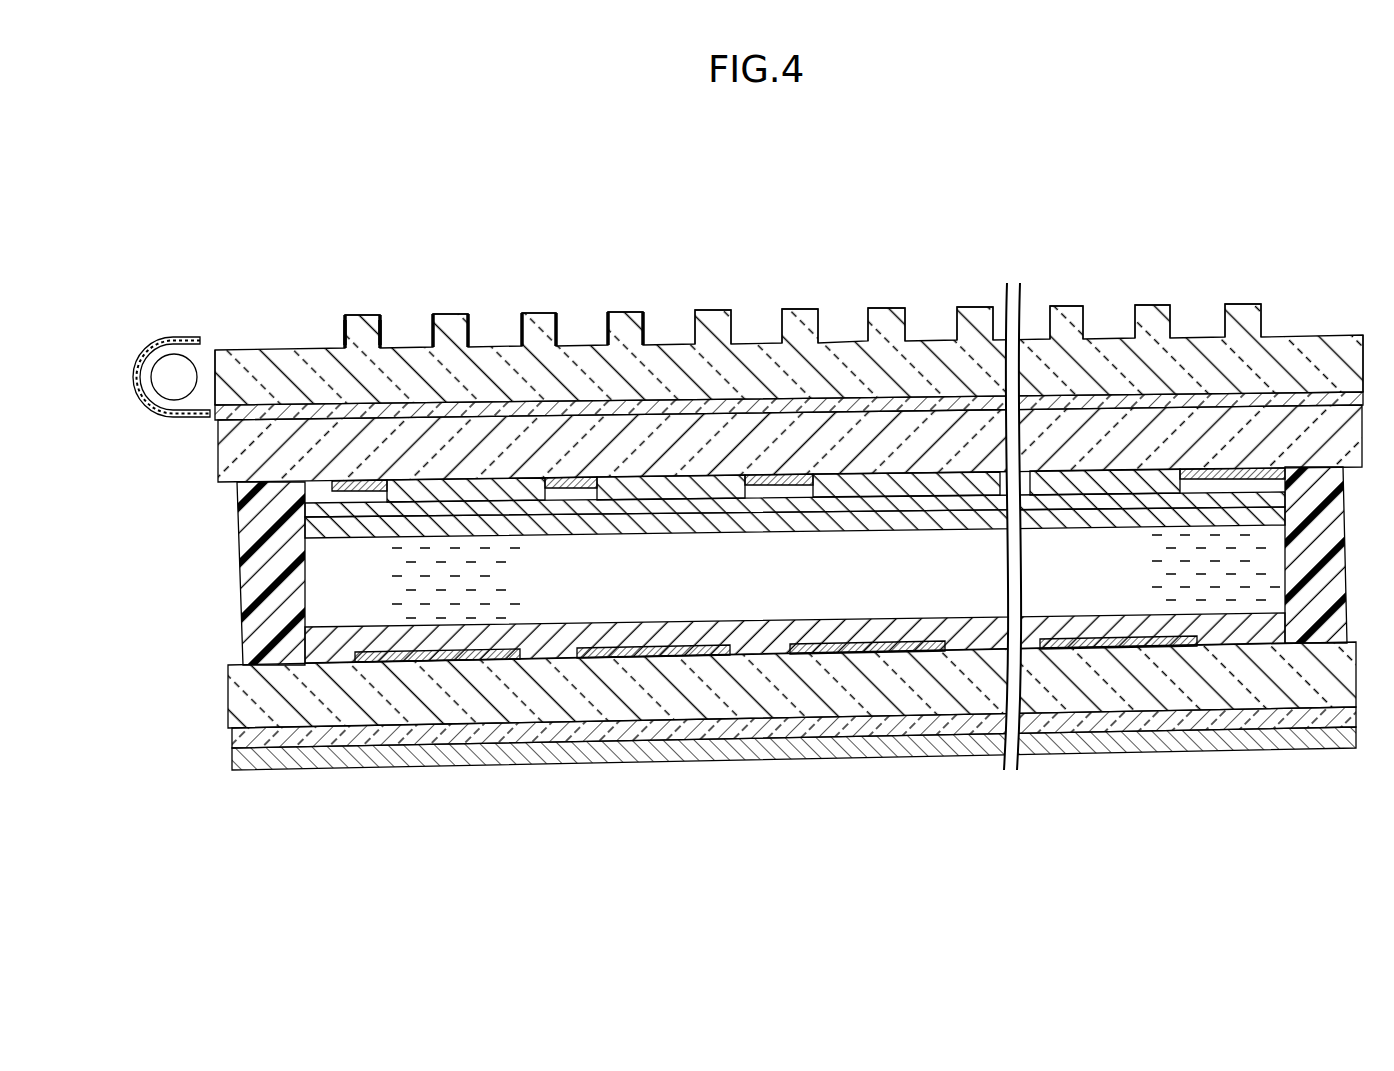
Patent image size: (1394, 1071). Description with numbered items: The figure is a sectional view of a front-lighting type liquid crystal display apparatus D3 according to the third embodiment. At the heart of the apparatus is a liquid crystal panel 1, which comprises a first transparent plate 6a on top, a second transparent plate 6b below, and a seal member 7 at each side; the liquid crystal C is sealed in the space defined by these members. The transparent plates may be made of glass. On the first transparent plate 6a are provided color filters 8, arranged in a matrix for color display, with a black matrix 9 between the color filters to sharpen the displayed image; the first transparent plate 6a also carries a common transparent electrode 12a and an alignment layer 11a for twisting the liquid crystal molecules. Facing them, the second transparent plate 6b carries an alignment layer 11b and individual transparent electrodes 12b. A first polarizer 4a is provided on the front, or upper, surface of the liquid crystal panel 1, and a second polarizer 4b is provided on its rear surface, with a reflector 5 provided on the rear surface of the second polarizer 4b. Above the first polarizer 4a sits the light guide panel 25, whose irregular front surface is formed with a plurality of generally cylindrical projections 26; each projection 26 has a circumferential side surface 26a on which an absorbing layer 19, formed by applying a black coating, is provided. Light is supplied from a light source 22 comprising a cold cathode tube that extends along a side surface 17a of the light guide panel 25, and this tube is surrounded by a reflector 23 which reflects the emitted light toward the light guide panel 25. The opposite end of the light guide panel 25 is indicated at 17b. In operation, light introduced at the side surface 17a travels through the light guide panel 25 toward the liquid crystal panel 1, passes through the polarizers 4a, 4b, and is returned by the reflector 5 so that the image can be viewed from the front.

The liquid crystal panel 1 is at (160, 585).
The first polarizer 4a is at (218, 412).
The second polarizer 4b is at (232, 738).
The reflector 5 is at (233, 760).
The first transparent plate 6a is at (243, 458).
The second transparent plate 6b is at (245, 692).
The seal member 7 is at (237, 560).
The color filters 8 is at (470, 503).
The black matrix 9 is at (353, 517).
The alignment layer 11a is at (320, 530).
The alignment layer 11b is at (340, 640).
The common transparent electrode 12a is at (330, 497).
The individual transparent electrodes 12b is at (428, 658).
The side surface 17a is at (230, 370).
The right end of light guide plate 17b is at (1366, 345).
The absorbing layer 19 is at (345, 333).
The light source 22 is at (162, 352).
The reflector 23 is at (136, 380).
The light guide panel 25 is at (253, 368).
The projections 26 is at (362, 315).
The circumferential side surface 26a is at (350, 318).
The liquid crystal C is at (330, 612).
The liquid crystal display apparatus D3 is at (1252, 210).